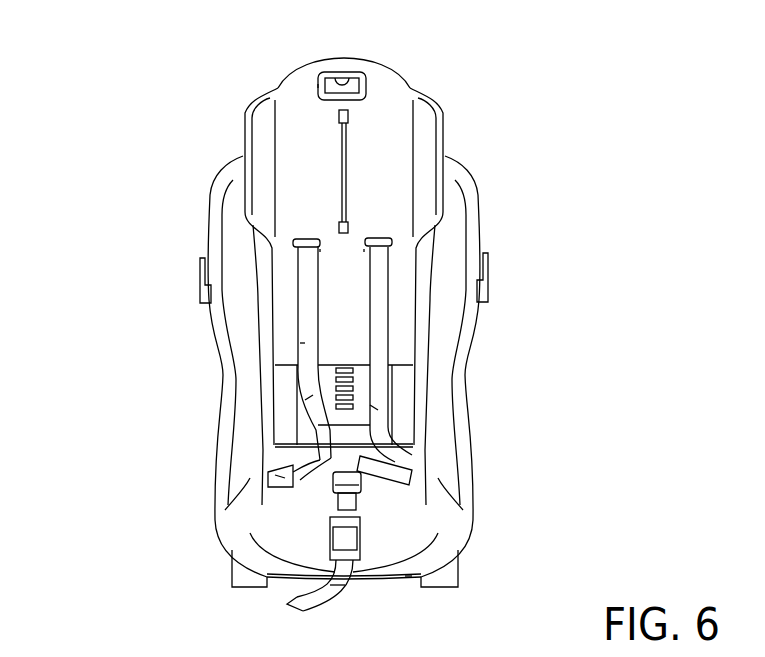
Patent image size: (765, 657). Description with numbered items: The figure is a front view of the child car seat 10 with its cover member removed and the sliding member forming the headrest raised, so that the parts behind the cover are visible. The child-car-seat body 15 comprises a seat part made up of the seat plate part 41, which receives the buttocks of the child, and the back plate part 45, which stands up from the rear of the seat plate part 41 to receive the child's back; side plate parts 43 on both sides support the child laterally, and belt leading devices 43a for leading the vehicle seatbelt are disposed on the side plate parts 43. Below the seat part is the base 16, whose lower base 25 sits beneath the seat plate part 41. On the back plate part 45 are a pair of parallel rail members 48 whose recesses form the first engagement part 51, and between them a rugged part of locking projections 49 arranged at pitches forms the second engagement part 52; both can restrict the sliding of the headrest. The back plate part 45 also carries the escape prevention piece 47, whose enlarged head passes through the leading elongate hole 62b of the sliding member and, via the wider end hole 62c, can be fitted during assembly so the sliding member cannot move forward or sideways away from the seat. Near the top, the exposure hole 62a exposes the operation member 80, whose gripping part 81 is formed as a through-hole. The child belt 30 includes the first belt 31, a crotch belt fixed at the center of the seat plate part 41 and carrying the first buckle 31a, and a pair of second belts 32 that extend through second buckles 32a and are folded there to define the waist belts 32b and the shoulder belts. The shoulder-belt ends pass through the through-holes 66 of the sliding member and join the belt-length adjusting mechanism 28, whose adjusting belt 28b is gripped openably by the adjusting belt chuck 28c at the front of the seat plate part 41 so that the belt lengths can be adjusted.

The child car seat 10 is at (480, 92).
The child-car-seat body 15 is at (122, 343).
The base 16 is at (407, 568).
The lower base 25 is at (462, 568).
The belt-length adjusting mechanism 28 is at (342, 589).
The adjusting belt 28b is at (336, 588).
The adjusting belt chuck 28c is at (410, 578).
The child belt 30 is at (344, 401).
The first belt 31 is at (250, 518).
The first buckle 31a is at (330, 486).
The second belt 32 is at (344, 374).
The second buckle 32a is at (305, 343).
The waist belt 32b is at (265, 480).
The seat plate part 41 is at (440, 520).
The side plate part 43 is at (216, 210).
The belt leading device 43a is at (200, 270).
The back plate part 45 is at (347, 424).
The escape prevention piece 47 is at (350, 222).
The rail member 48 is at (283, 401).
The locking projection 49 is at (249, 385).
The first engagement part 51 is at (341, 403).
The second engagement part 52 is at (336, 388).
The exposure hole 62a is at (322, 74).
The leading elongate hole 62b is at (341, 157).
The end hole 62c is at (349, 120).
The through-hole 66 is at (364, 249).
The operation member 80 is at (377, 58).
The gripping part 81 is at (341, 77).